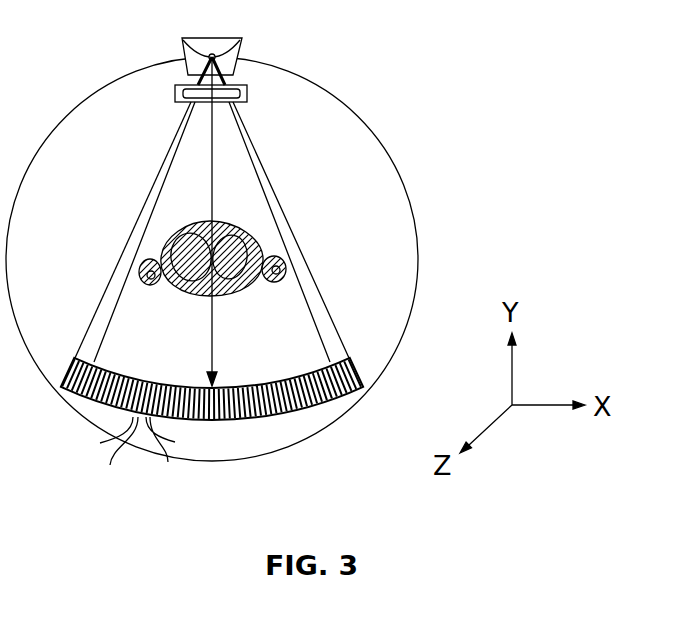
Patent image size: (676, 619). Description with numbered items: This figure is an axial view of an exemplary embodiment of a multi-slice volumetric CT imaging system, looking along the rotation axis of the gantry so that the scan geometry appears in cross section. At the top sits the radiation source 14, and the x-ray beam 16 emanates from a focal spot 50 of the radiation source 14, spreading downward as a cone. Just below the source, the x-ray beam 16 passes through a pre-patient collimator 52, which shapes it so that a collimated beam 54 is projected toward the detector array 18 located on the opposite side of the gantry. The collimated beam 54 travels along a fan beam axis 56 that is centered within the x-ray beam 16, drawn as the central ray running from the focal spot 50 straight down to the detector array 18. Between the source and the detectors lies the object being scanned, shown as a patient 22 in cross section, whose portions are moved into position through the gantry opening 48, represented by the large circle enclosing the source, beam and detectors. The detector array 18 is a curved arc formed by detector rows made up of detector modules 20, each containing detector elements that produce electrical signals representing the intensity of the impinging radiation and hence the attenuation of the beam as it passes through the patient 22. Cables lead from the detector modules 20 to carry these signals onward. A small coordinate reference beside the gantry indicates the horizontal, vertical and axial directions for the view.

The radiation source 14 is at (223, 52).
The x-ray beam 16 is at (285, 188).
The detector array 18 is at (364, 367).
The detector modules 20 is at (100, 443).
The patient 22 is at (220, 221).
The gantry opening 48 is at (363, 140).
The focal spot 50 is at (183, 40).
The pre-patient collimator 52 is at (247, 93).
The collimated beam 54 is at (100, 300).
The fan beam axis 56 is at (215, 312).